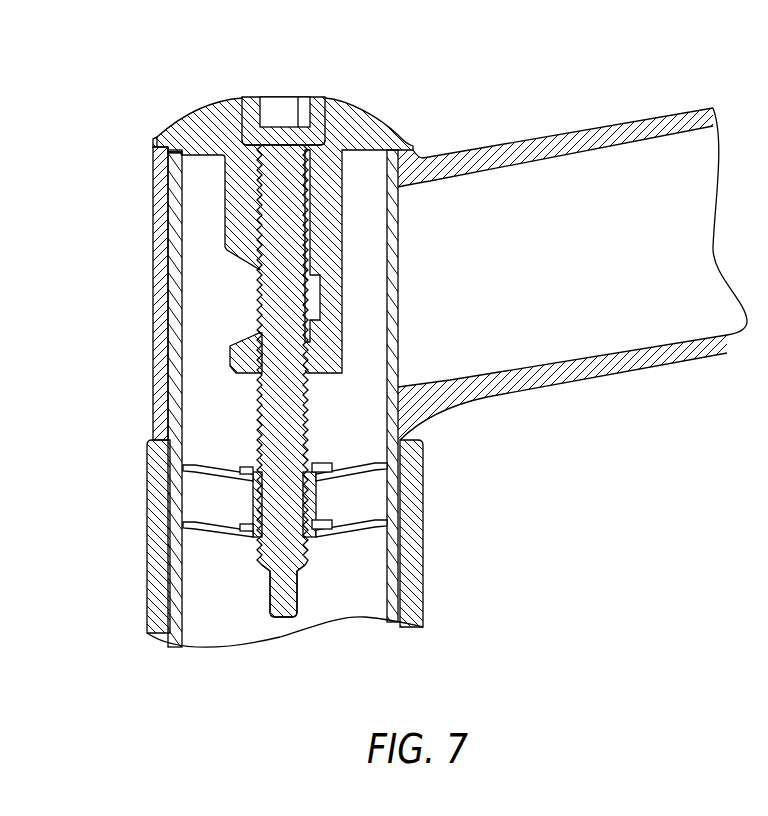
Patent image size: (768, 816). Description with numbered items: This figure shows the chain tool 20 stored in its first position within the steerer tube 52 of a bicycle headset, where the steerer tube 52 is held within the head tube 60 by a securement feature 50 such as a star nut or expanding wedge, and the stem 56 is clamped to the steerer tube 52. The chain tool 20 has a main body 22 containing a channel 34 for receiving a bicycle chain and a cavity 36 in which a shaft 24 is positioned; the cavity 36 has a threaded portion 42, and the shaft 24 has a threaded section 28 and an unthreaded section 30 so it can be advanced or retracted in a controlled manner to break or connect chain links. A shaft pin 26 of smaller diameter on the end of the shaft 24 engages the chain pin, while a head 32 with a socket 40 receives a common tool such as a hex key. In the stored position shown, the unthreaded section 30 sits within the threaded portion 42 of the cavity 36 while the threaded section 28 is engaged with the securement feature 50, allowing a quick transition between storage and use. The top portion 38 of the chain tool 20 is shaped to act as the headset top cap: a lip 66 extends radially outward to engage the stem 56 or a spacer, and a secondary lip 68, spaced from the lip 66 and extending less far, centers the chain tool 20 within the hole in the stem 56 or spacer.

The chain tool 20 is at (446, 132).
The main body 22 is at (330, 203).
The shaft 24 is at (351, 605).
The shaft pin 26 is at (282, 618).
The threaded section 28 is at (310, 422).
The unthreaded section 30 is at (307, 260).
The head 32 is at (320, 101).
The channel 34 is at (315, 298).
The cavity 36 is at (253, 282).
The top portion 38 is at (197, 108).
The socket 40 is at (285, 101).
The threaded portion 42 is at (237, 242).
The securement feature 50 is at (362, 549).
The steerer tube 52 is at (183, 580).
The stem 56 is at (153, 300).
The head tube 60 is at (152, 535).
The lip 66 is at (150, 145).
The secondary lip 68 is at (150, 151).